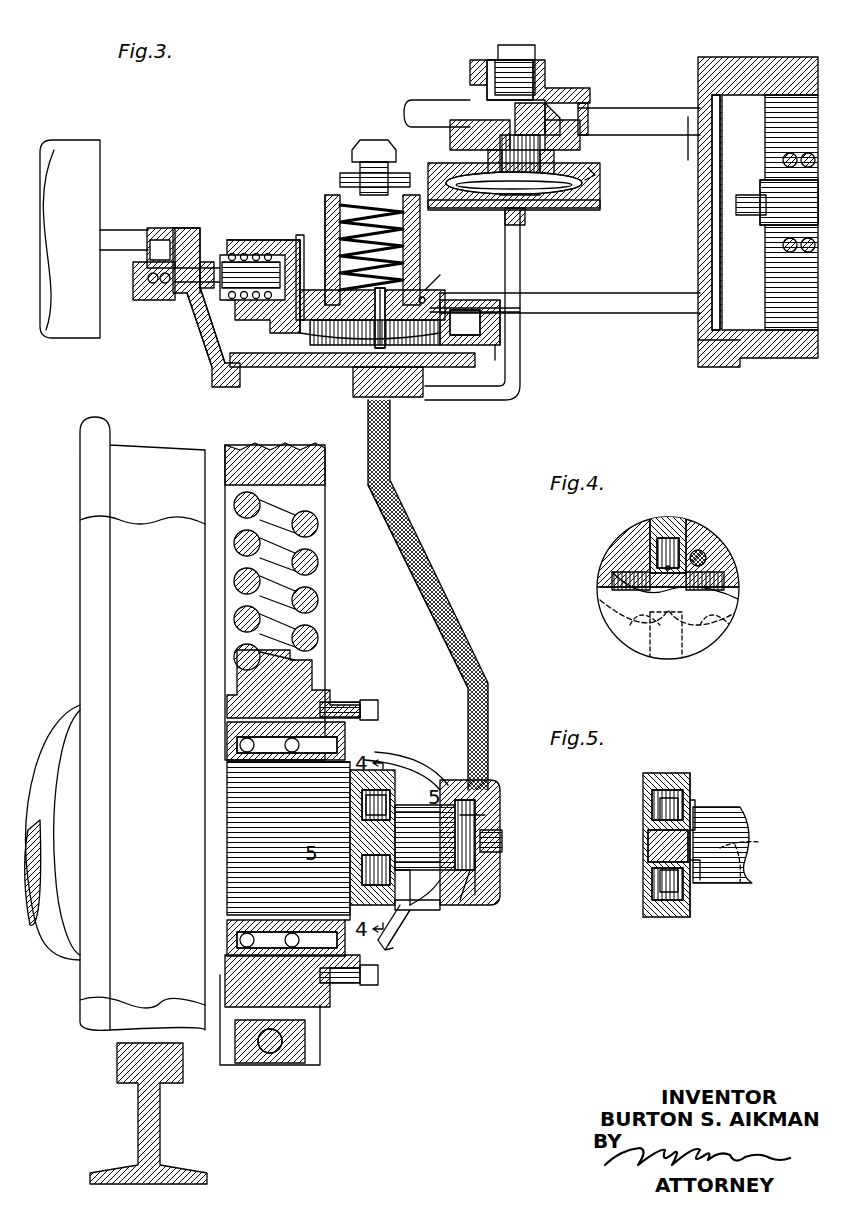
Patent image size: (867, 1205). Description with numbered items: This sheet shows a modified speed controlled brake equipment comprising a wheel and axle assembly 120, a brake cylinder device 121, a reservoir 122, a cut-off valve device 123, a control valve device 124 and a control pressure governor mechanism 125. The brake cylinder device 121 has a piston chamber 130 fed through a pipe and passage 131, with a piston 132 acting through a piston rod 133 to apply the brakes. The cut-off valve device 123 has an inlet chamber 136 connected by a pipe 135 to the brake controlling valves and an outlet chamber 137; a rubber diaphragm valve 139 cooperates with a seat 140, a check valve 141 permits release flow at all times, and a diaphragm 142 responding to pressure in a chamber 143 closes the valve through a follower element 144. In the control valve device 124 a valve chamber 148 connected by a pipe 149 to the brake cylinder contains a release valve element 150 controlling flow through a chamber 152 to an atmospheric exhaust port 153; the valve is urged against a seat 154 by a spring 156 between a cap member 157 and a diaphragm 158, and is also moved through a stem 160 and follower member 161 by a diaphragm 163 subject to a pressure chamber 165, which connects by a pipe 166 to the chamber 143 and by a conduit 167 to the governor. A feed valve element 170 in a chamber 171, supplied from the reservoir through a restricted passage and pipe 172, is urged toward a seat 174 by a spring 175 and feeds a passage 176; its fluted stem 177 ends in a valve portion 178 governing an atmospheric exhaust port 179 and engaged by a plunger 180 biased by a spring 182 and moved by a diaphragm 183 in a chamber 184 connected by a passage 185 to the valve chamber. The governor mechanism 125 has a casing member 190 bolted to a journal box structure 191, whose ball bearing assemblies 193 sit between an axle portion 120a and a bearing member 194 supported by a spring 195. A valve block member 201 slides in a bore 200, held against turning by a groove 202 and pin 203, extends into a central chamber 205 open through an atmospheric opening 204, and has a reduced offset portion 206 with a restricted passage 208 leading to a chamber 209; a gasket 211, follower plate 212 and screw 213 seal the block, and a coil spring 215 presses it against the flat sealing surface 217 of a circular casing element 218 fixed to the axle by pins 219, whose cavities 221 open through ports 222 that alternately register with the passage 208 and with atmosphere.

In FIG. 3, the wheel and axle assembly 120 is at (160, 980).
In FIG. 3, the axle portion 120a is at (260, 810).
In FIG. 3, the brake cylinder device 121 is at (745, 62).
In FIG. 3, the main reservoir 122 is at (80, 215).
In FIG. 3, the cut-off valve device 123 is at (585, 178).
In FIG. 3, the control valve device 124 is at (438, 268).
In FIG. 3, the control pressure governor mechanism 125 is at (398, 719).
In FIG. 3, the piston chamber 130 is at (716, 200).
In FIG. 3, the pipe and passage 131 is at (688, 145).
In FIG. 3, the piston 132 is at (755, 345).
In FIG. 3, the piston rod 133 is at (800, 60).
In FIG. 3, the pipe 135 is at (440, 115).
In FIG. 3, the inlet chamber 136 is at (480, 105).
In FIG. 3, the outlet chamber 137 is at (600, 120).
In FIG. 3, the rubber diaphragm valve 139 is at (458, 145).
In FIG. 3, the seat 140 is at (540, 115).
In FIG. 3, the check valve 141 is at (518, 70).
In FIG. 3, the diaphragm 142 is at (575, 210).
In FIG. 3, the chamber 143 is at (520, 222).
In FIG. 3, the follower element 144 is at (500, 195).
In FIG. 3, the valve chamber 148 is at (384, 295).
In FIG. 3, the pipe 149 is at (608, 305).
In FIG. 3, the release valve element 150 is at (360, 300).
In FIG. 3, the chamber 152 is at (470, 322).
In FIG. 3, the atmospheric exhaust port 153 is at (493, 328).
In FIG. 3, the seat 154 is at (440, 312).
In FIG. 3, the spring 156 is at (360, 200).
In FIG. 3, the cap member 157 is at (375, 165).
In FIG. 3, the diaphragm 158 is at (425, 298).
In FIG. 3, the stem 160 is at (375, 333).
In FIG. 3, the follower member 161 is at (350, 360).
In FIG. 3, the diaphragm 163 is at (491, 361).
In FIG. 3, the pressure chamber 165 is at (388, 425).
In FIG. 3, the pipe 166 is at (518, 385).
In FIG. 3, the conduit 167 is at (380, 480).
In FIG. 3, the feed valve element 170 is at (170, 300).
In FIG. 3, the chamber 171 is at (160, 292).
In FIG. 3, the restricted passage and pipe 172 is at (120, 240).
In FIG. 3, the seat 174 is at (185, 228).
In FIG. 3, the spring 175 is at (153, 284).
In FIG. 3, the passage 176 is at (212, 370).
In FIG. 3, the fluted stem 177 is at (197, 300).
In FIG. 3, the valve portion 178 is at (233, 245).
In FIG. 3, the atmospheric exhaust port 179 is at (205, 262).
In FIG. 3, the plunger 180 is at (255, 240).
In FIG. 3, the spring 182 is at (298, 240).
In FIG. 3, the diaphragm 183 is at (250, 262).
In FIG. 3, the chamber 184 is at (312, 235).
In FIG. 3, the passage 185 is at (330, 335).
In FIG. 3, the casing member 190 is at (390, 950).
In FIG. 3, the journal box structure 191 is at (325, 1000).
In FIG. 3, the ball bearing assemblies 193 is at (245, 770).
In FIG. 3, the bearing member 194 is at (240, 680).
In FIG. 3, the spring 195 is at (240, 615).
In FIG. 3, the bore 200 is at (470, 870).
In FIG. 3, the valve block member 201 is at (420, 805).
In FIG. 5, the valve block member 201 is at (735, 828).
In FIG. 3, the longitudinal groove 202 is at (445, 895).
In FIG. 3, the pin 203 is at (405, 912).
In FIG. 3, the atmospheric opening 204 is at (395, 950).
In FIG. 3, the central chamber 205 is at (378, 940).
In FIG. 3, the reduced offset portion 206 is at (412, 758).
In FIG. 5, the reduced offset portion 206 is at (693, 830).
In FIG. 3, the restricted passage 208 is at (470, 782).
In FIG. 5, the restricted passage 208 is at (740, 845).
In FIG. 3, the chamber 209 is at (485, 872).
In FIG. 3, the gasket 211 is at (470, 880).
In FIG. 5, the follower plate 212 is at (580, 778).
In FIG. 3, the screw 213 is at (480, 815).
In FIG. 3, the coil spring 215 is at (498, 840).
In FIG. 3, the flat sealing surface 217 is at (370, 862).
In FIG. 5, the flat sealing surface 217 is at (690, 865).
In FIG. 3, the circular casing element 218 is at (365, 820).
In FIG. 5, the circular casing element 218 is at (655, 800).
In FIG. 3, the pins 219 is at (309, 819).
In FIG. 3, the cavities 221 is at (375, 800).
In FIG. 5, the cavities 221 is at (668, 808).
In FIG. 5, the port 222 is at (655, 845).